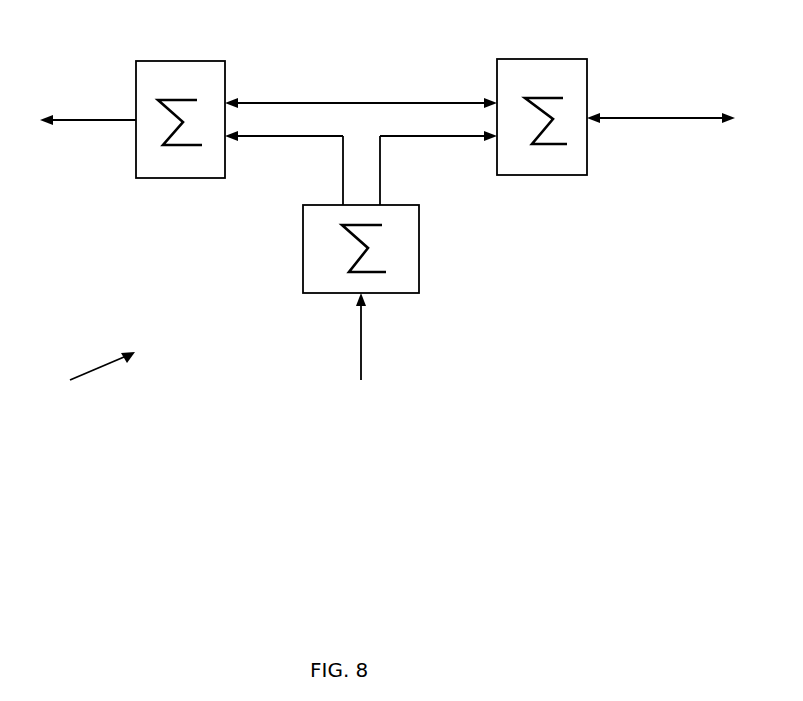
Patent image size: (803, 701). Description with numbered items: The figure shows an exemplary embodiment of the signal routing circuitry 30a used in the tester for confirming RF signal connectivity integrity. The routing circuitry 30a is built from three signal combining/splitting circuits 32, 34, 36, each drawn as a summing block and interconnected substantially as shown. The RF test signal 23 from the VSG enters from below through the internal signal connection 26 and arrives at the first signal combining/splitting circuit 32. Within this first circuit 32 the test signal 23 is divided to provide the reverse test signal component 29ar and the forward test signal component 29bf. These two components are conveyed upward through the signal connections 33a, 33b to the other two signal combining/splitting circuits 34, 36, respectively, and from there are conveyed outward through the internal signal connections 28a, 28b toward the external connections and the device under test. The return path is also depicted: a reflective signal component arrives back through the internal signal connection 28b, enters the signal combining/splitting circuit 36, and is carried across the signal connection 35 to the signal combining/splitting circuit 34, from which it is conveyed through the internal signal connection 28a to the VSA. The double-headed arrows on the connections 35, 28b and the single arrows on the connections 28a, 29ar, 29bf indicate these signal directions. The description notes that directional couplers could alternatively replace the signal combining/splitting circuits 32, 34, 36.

The RF test signal 23 is at (361, 352).
The internal signal connection 26 is at (361, 330).
The internal signal connection 28a is at (89, 118).
The internal signal connection 28b is at (660, 117).
The reverse test signal component 29ar is at (270, 137).
The forward test signal component 29bf is at (449, 137).
The signal routing circuitry 30a is at (85, 376).
The first signal combining/splitting circuit 32 is at (419, 263).
The signal connection 33a is at (317, 137).
The signal connection 33b is at (380, 173).
The signal combining/splitting circuit 34 is at (192, 61).
The signal connection 35 is at (362, 103).
The signal combining/splitting circuit 36 is at (542, 59).